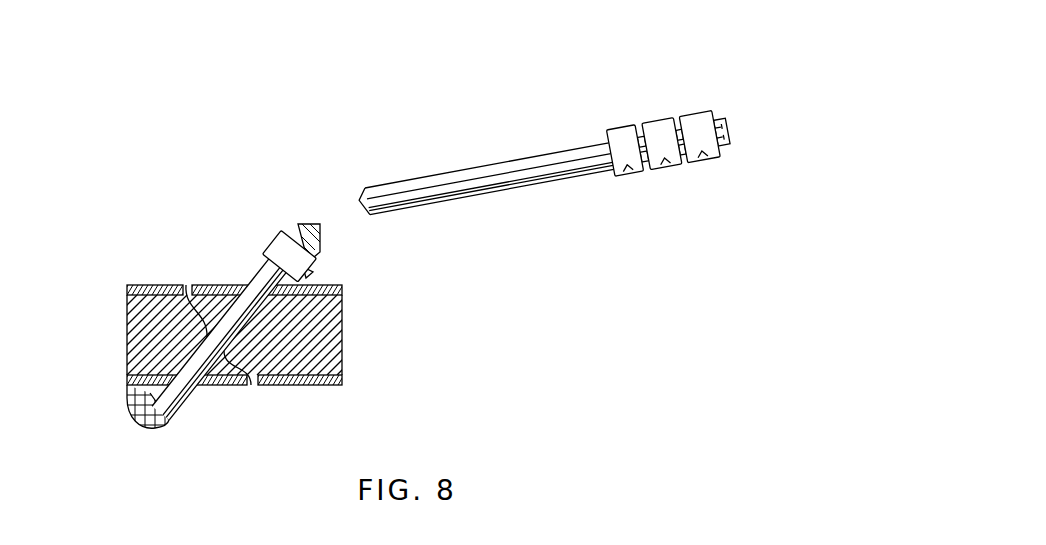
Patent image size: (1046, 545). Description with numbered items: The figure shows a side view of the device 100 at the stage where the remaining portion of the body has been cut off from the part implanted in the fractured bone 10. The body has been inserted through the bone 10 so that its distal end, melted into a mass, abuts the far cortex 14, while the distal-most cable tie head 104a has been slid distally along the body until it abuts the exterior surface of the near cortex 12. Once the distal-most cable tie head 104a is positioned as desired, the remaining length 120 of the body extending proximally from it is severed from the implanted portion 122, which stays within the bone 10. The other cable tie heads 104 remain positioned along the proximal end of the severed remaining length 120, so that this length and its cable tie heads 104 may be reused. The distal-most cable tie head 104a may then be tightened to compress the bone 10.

The fractured bone 10 is at (155, 283).
The near cortex 12 is at (330, 283).
The far cortex 14 is at (232, 386).
The device 100 is at (357, 145).
The cable tie heads 104 is at (700, 112).
The distal-most cable tie head 104a is at (272, 240).
The remaining length 120 is at (472, 166).
The implanted portion 122 is at (257, 274).